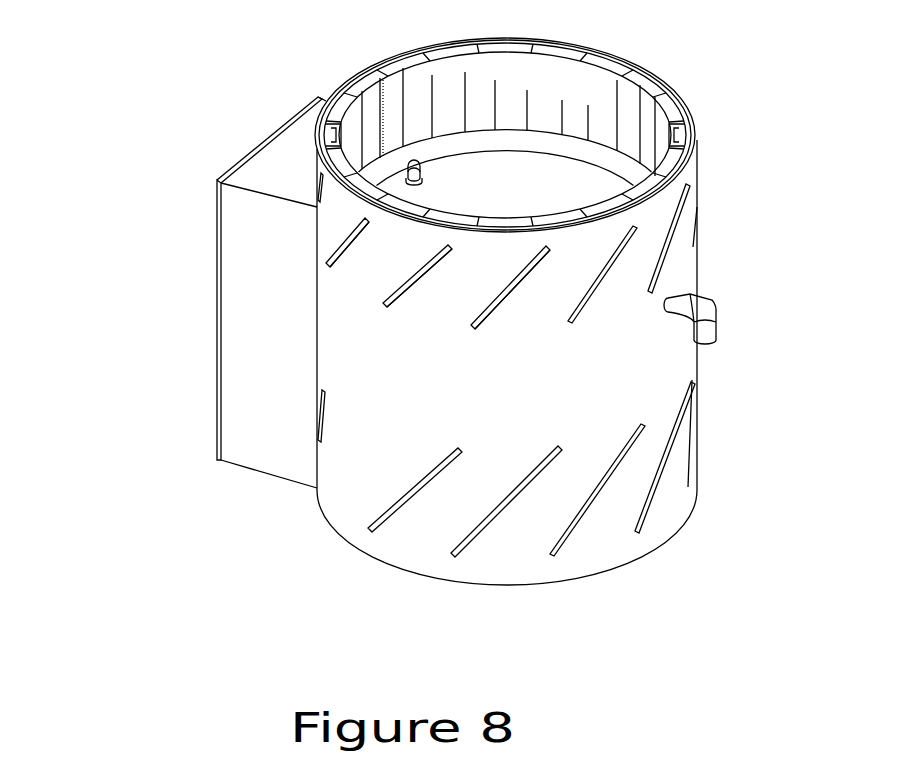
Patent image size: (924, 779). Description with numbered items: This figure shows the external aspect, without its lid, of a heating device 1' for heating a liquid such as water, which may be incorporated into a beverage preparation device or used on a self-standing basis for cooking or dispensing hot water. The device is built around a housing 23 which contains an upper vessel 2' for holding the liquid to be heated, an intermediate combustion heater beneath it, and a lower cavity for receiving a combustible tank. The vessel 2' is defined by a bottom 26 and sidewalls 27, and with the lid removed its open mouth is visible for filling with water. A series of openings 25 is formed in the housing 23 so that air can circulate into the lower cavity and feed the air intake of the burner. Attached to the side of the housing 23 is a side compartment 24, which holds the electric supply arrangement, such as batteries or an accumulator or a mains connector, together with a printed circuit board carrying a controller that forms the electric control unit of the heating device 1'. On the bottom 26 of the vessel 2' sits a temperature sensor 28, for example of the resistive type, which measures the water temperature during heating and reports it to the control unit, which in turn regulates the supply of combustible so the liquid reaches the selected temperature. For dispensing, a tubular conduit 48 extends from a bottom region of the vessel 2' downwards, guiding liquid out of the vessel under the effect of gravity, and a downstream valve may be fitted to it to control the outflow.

The heating device 1' is at (141, 48).
The vessel 2' is at (446, 292).
The housing 23 is at (345, 520).
The side compartment 24 is at (240, 402).
The openings 25 is at (538, 467).
The bottom 26 is at (505, 171).
The sidewalls 27 is at (587, 82).
The temperature sensor 28 is at (418, 172).
The tubular conduit 48 is at (705, 330).